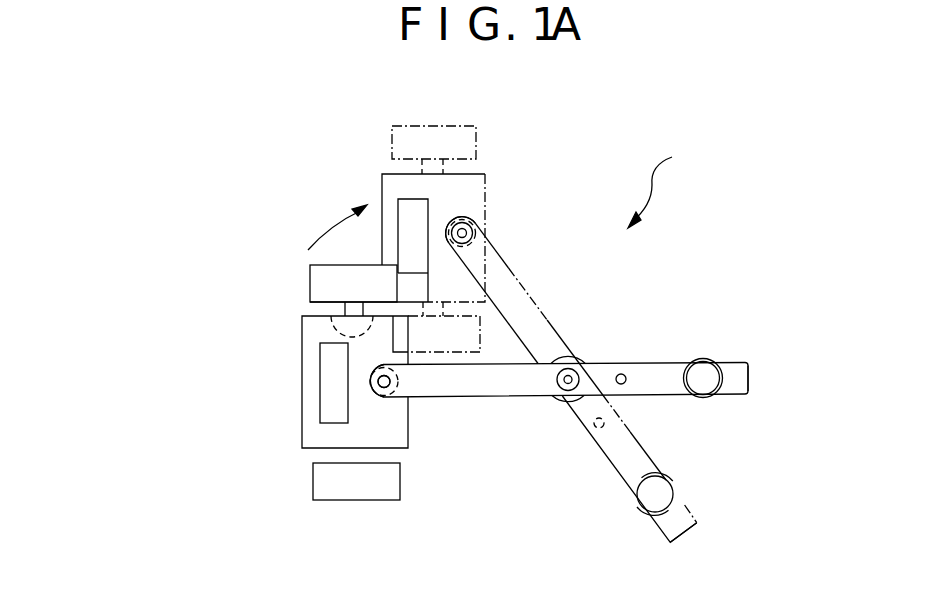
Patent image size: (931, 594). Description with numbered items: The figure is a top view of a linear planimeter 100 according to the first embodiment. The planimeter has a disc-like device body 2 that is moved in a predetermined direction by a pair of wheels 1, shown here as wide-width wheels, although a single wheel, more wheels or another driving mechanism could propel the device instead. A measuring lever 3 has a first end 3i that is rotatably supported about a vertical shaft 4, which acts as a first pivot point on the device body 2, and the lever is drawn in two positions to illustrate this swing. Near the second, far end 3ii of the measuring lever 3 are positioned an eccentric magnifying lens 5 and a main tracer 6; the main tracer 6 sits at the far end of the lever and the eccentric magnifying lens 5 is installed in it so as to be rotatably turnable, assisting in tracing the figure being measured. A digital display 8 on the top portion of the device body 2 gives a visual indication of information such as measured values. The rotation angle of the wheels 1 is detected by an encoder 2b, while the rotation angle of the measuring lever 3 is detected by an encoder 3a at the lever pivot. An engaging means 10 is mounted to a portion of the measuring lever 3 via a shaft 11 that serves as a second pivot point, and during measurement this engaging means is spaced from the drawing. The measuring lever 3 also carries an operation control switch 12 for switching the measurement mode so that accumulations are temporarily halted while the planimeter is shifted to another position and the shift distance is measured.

The wheels 1 is at (438, 126).
The device body 2 is at (382, 184).
The encoder 2b is at (312, 312).
The measuring lever 3 is at (510, 268).
The encoder 3a is at (398, 378).
The first end 3i is at (488, 237).
The second end 3ii is at (737, 370).
The vertical shaft 4 is at (463, 222).
The eccentric magnifying lens 5 is at (703, 372).
The main tracer 6 is at (705, 398).
The digital display 8 is at (330, 358).
The engaging means 10 is at (565, 356).
The shaft 11 is at (575, 376).
The operation control switch 12 is at (626, 383).
The linear planimeter 100 is at (677, 179).